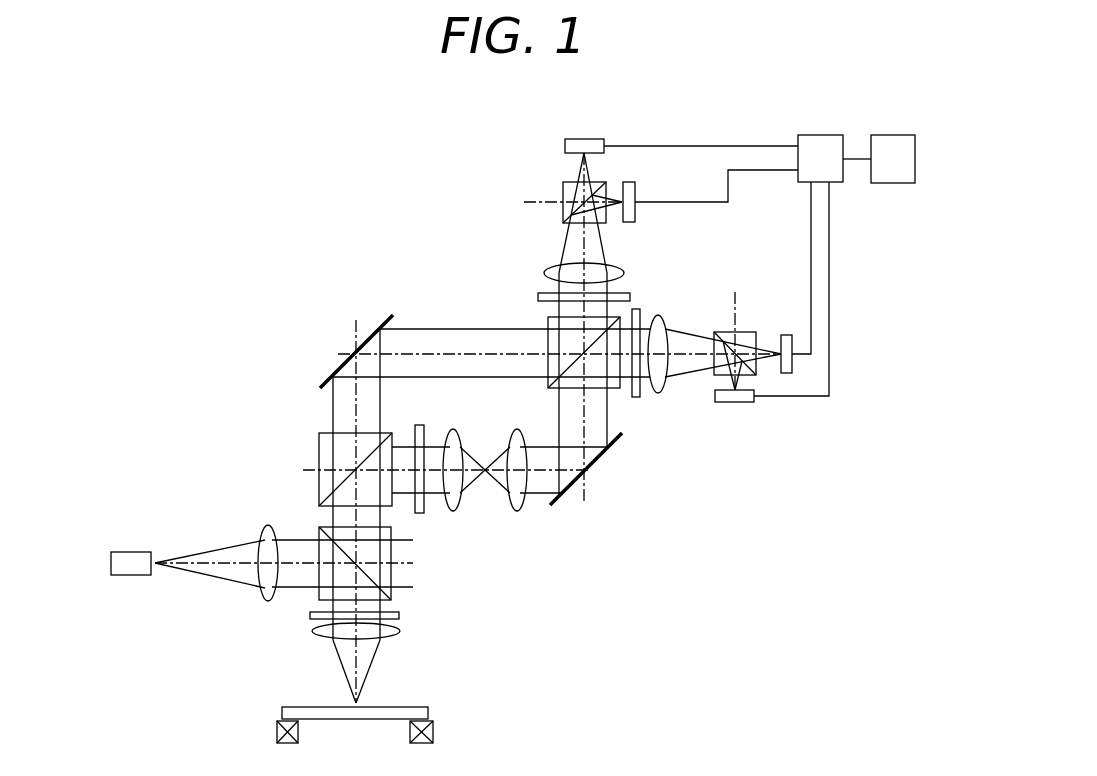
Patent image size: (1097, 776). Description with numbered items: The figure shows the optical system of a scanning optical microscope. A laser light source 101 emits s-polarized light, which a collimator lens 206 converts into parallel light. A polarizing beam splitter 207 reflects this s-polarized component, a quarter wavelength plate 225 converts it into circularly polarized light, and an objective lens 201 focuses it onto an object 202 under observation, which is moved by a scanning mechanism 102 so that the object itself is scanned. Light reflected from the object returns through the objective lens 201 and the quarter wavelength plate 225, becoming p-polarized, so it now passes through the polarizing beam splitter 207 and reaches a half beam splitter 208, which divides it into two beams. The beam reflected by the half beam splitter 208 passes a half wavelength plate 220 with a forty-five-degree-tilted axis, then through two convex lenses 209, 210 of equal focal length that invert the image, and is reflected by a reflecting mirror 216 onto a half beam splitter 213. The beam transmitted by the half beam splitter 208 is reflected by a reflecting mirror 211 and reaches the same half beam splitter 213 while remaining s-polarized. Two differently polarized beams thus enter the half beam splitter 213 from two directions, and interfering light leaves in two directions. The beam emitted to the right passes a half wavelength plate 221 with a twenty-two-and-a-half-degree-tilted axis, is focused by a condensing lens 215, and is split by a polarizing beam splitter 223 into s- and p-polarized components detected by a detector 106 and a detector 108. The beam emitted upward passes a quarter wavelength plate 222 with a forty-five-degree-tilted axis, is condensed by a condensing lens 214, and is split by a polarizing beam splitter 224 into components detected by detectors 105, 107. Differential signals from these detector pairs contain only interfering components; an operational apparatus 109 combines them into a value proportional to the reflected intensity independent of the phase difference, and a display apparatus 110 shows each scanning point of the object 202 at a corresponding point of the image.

The laser light source 101 is at (141, 552).
The scanning mechanism 102 is at (433, 732).
The detector 105 is at (565, 146).
The detector 106 is at (785, 335).
The detector 107 is at (635, 193).
The detector 108 is at (735, 402).
The operational apparatus 109 is at (817, 135).
The display apparatus 110 is at (892, 135).
The objective lens 201 is at (320, 638).
The object under observation 202 is at (418, 707).
The collimator lens 206 is at (266, 526).
The polarizing beam splitter 207 is at (391, 580).
The half beam splitter 208 is at (319, 447).
The convex lens 209 is at (453, 511).
The convex lens 210 is at (517, 511).
The reflecting mirror 211 is at (338, 370).
The half beam splitter 213 is at (548, 322).
The condensing lens 214 is at (545, 271).
The condensing lens 215 is at (659, 316).
The reflecting mirror 216 is at (594, 462).
The half wavelength plate 220 is at (419, 425).
The half wavelength plate 221 is at (636, 309).
The quarter wavelength plate 222 is at (538, 296).
The polarizing beam splitter 223 is at (717, 332).
The polarizing beam splitter 224 is at (563, 196).
The quarter wavelength plate 225 is at (310, 616).